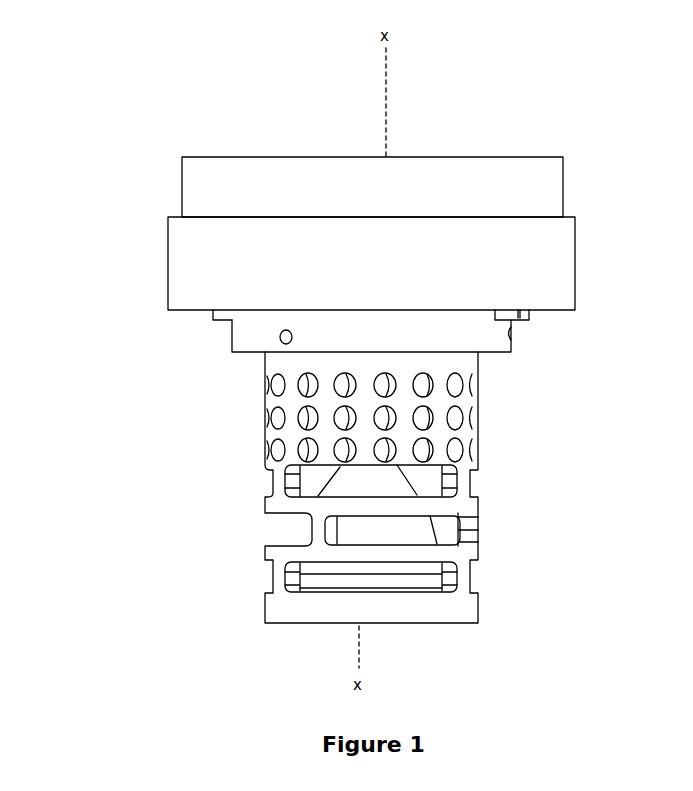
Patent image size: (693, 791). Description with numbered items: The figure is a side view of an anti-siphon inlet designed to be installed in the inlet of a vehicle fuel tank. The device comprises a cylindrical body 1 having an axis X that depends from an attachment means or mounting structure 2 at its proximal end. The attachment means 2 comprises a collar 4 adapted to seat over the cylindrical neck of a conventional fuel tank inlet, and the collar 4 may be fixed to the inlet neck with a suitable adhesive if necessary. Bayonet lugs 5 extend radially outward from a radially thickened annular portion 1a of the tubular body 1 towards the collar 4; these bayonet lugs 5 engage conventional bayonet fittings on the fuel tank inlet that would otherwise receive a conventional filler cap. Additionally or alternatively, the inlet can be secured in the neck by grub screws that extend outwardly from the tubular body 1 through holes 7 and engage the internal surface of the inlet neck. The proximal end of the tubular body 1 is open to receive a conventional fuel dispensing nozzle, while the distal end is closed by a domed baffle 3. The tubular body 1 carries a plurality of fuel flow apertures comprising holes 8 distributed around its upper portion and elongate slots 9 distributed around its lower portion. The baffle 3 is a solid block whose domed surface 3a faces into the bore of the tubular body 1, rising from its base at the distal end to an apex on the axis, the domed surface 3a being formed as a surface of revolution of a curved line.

The cylindrical body 1 is at (468, 430).
The radially thickened annular portion 1a is at (235, 352).
The attachment means 2 is at (582, 181).
The domed baffle 3 is at (330, 488).
The domed surface 3a is at (404, 525).
The collar 4 is at (172, 274).
The bayonet lugs 5 is at (214, 320).
The holes 7 is at (290, 331).
The holes 8 is at (309, 418).
The elongate slots 9 is at (267, 574).